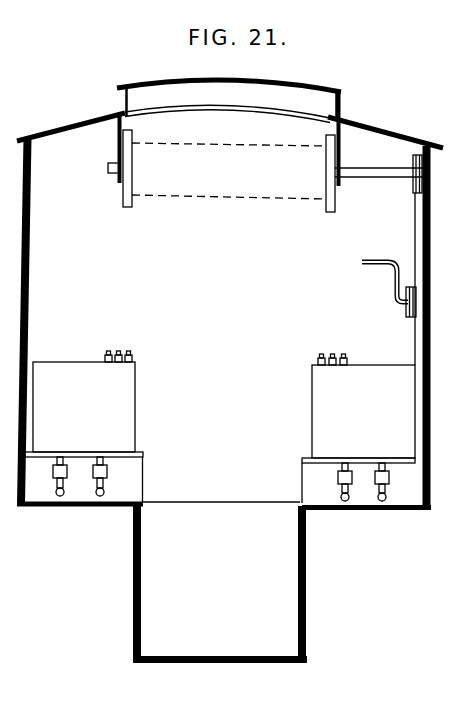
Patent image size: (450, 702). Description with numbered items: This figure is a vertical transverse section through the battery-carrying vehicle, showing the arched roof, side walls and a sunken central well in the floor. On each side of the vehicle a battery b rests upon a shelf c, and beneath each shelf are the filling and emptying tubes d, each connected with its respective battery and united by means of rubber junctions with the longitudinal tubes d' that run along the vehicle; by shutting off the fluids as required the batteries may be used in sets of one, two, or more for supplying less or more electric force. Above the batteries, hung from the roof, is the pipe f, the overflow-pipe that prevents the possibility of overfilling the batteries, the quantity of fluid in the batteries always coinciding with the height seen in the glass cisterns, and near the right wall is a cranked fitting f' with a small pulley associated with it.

The overflow-pipe f is at (266, 152).
The crank for drum f' is at (389, 289).
The batteries b is at (224, 404).
The shelf c is at (219, 452).
The filling and emptying tubes d is at (230, 473).
The longitudinal tubes d' is at (234, 492).